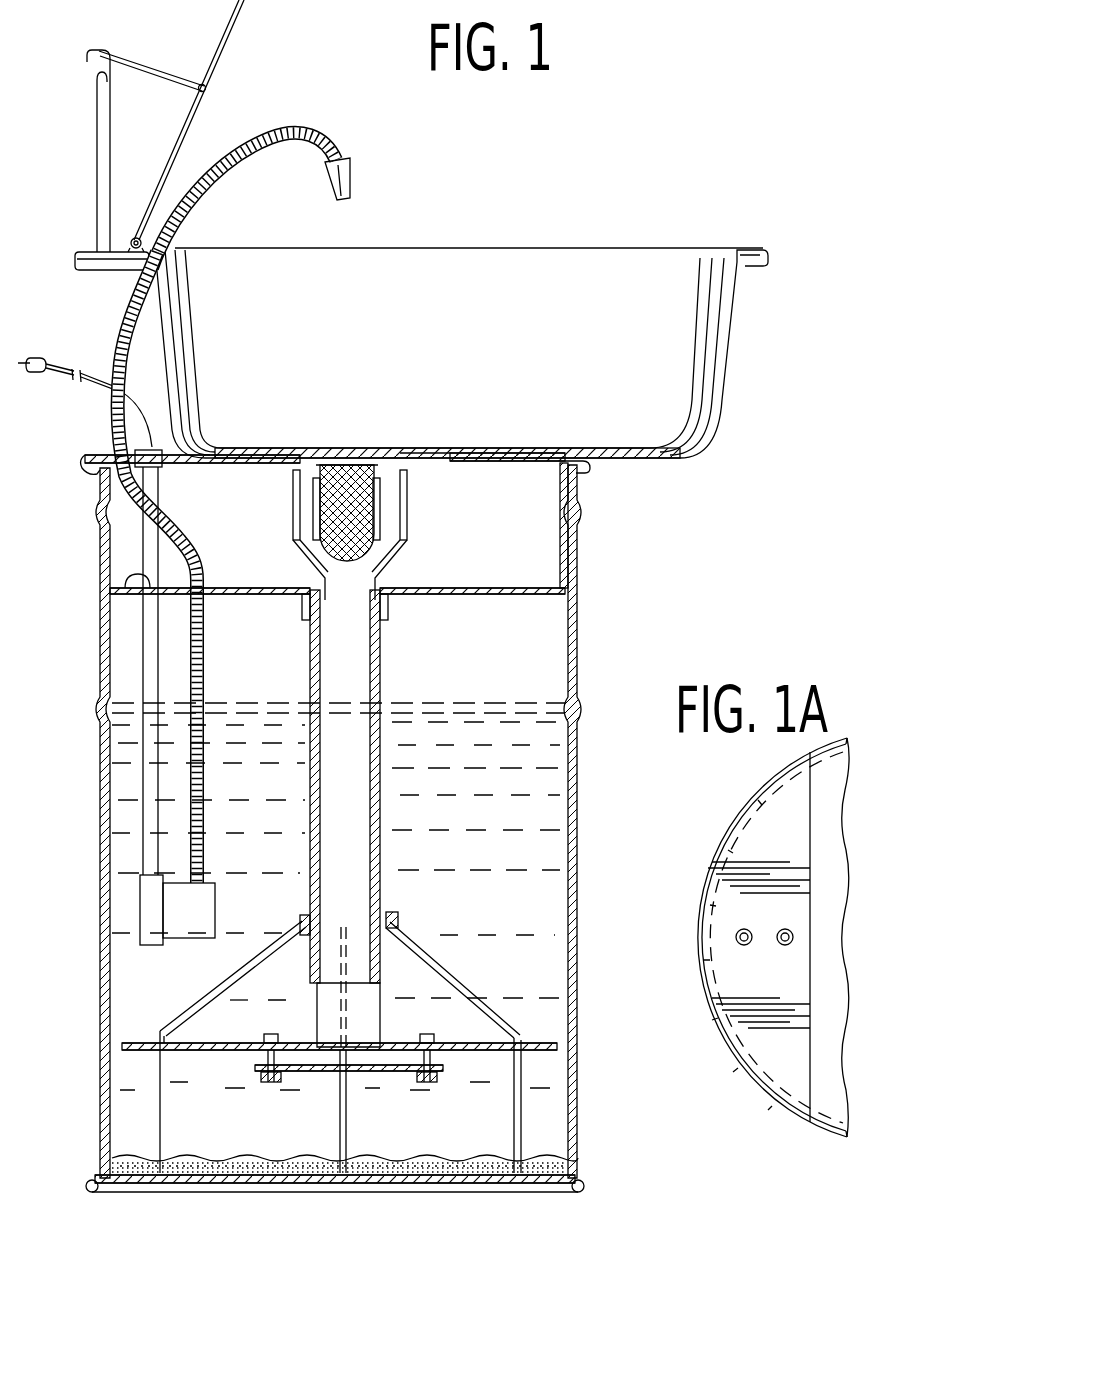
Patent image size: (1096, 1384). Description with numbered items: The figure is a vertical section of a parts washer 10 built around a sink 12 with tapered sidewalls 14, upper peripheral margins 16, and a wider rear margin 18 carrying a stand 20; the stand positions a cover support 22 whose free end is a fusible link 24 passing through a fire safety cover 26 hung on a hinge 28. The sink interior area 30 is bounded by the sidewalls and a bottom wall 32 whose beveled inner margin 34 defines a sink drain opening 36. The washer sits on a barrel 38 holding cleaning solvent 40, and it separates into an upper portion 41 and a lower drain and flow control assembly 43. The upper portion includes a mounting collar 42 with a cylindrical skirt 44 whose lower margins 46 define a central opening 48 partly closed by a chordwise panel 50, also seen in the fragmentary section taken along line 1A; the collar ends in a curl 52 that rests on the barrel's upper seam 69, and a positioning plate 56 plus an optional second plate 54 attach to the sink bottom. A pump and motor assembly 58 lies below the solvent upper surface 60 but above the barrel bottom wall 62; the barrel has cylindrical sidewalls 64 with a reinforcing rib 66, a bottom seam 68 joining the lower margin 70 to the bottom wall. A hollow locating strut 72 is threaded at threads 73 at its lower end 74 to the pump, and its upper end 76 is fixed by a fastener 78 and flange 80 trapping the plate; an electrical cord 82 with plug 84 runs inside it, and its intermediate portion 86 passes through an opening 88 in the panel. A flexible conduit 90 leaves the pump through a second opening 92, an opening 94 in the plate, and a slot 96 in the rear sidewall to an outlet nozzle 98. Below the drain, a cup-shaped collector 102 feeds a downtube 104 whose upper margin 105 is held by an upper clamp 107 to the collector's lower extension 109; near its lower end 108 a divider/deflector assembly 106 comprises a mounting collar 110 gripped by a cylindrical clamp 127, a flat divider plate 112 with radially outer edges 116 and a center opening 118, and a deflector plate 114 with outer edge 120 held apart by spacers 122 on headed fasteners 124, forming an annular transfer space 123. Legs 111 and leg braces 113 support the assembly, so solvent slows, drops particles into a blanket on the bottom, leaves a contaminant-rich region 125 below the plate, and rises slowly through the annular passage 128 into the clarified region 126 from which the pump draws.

In FIG. 1, the parts washer 10 is at (93, 566).
In FIG. 1, the sink 12 is at (614, 203).
In FIG. 1, the sidewalls 14 is at (730, 366).
In FIG. 1, the upper peripheral margins 16 is at (755, 250).
In FIG. 1, the rear margin 18 is at (122, 247).
In FIG. 1, the stand 20 is at (100, 162).
In FIG. 1, the cover support 22 is at (135, 58).
In FIG. 1, the fusible link 24 is at (206, 90).
In FIG. 1, the fire safety cover 26 is at (238, 12).
In FIG. 1, the hinge 28 is at (143, 238).
In FIG. 1, the interior area 30 is at (530, 357).
In FIG. 1, the bottom wall 32 is at (510, 448).
In FIG. 1, the inner margin 34 is at (280, 452).
In FIG. 1, the sink drain opening 36 is at (358, 451).
In FIG. 1, the barrel 38 is at (584, 780).
In FIG. 1, the cleaning solvent 40 is at (465, 868).
In FIG. 1, the upper portion 41 is at (117, 318).
In FIG. 1, the mounting collar 42 is at (554, 526).
In FIG. 1, the drain and flow control assembly 43 is at (412, 612).
In FIG. 1, the cylindrical skirt 44 is at (572, 554).
In FIG. 1, the lower margins 46 is at (570, 592).
In FIG. 1, the central opening 48 is at (545, 596).
In FIG. 1, the panel 50 is at (215, 588).
In FIG. 1A, the panel 50 is at (800, 1070).
In FIG. 1, the curl 52 is at (592, 462).
In FIG. 1, the second plate 54 is at (455, 462).
In FIG. 1, the positioning plate 56 is at (212, 466).
In FIG. 1A, the positioning plate 56 is at (830, 992).
In FIG. 1, the pump and motor assembly 58 is at (136, 900).
In FIG. 1, the upper surface 60 is at (270, 706).
In FIG. 1, the bottom wall 62 is at (221, 1160).
In FIG. 1, the cylindrical sidewalls 64 is at (580, 872).
In FIG. 1A, the cylindrical sidewalls 64 is at (772, 773).
In FIG. 1, the reinforcing rib 66 is at (580, 714).
In FIG. 1, the bottom seam 68 is at (584, 1182).
In FIG. 1, the upper seam 69 is at (98, 482).
In FIG. 1, the lower margin 70 is at (100, 1168).
In FIG. 1, the locating strut 72 is at (145, 667).
In FIG. 1A, the locating strut 72 is at (741, 930).
In FIG. 1, the threads 73 is at (148, 866).
In FIG. 1, the lower end 74 is at (152, 840).
In FIG. 1, the upper end 76 is at (166, 482).
In FIG. 1, the fastener 78 is at (192, 450).
In FIG. 1, the flange 80 is at (166, 442).
In FIG. 1, the electrical cord 82 is at (110, 388).
In FIG. 1, the electrical plug 84 is at (40, 358).
In FIG. 1, the intermediate portion 86 is at (200, 643).
In FIG. 1, the opening 88 is at (132, 574).
In FIG. 1A, the opening 88 is at (745, 946).
In FIG. 1, the flexible conduit 90 is at (197, 762).
In FIG. 1, the second opening 92 is at (204, 586).
In FIG. 1, the opening 94 is at (110, 456).
In FIG. 1, the slot 96 is at (163, 300).
In FIG. 1A, the slot 96 is at (785, 946).
In FIG. 1, the outlet nozzle 98 is at (350, 176).
In FIG. 1, the collector 102 is at (416, 538).
In FIG. 1, the downtube 104 is at (382, 682).
In FIG. 1, the upper margin 105 is at (314, 600).
In FIG. 1, the divider/deflector assembly 106 is at (402, 1031).
In FIG. 1, the upper clamp 107 is at (390, 598).
In FIG. 1, the lower end 108 is at (303, 934).
In FIG. 1, the lower extension 109 is at (338, 602).
In FIG. 1, the mounting collar 110 is at (409, 952).
In FIG. 1, the legs 111 is at (520, 1130).
In FIG. 1, the divider plate 112 is at (236, 1035).
In FIG. 1, the leg braces 113 is at (180, 1018).
In FIG. 1, the flow deflector plate 114 is at (349, 1077).
In FIG. 1, the radially outer edges 116 is at (555, 1042).
In FIG. 1, the opening 118 is at (387, 1018).
In FIG. 1, the outer edge 120 is at (260, 1074).
In FIG. 1, the spacers 122 is at (434, 1060).
In FIG. 1, the transfer space 123 is at (314, 1056).
In FIG. 1, the headed fasteners 124 is at (283, 1078).
In FIG. 1, the contaminant-rich region 125 is at (178, 1113).
In FIG. 1, the clarified region 126 is at (238, 793).
In FIG. 1, the cylindrical clamp 127 is at (400, 915).
In FIG. 1, the annular passage 128 is at (100, 1017).
In FIG. 1, the section line 1A— 1A is at (70, 577).